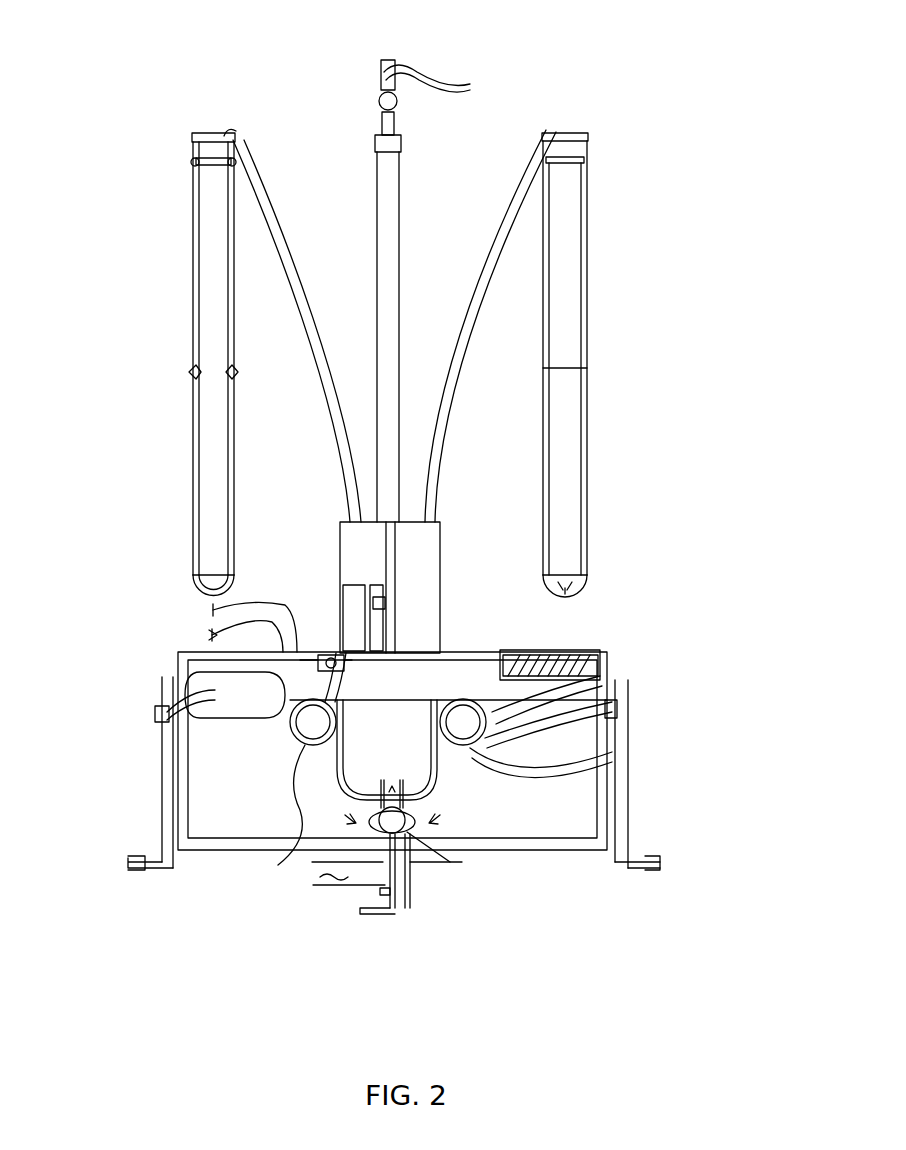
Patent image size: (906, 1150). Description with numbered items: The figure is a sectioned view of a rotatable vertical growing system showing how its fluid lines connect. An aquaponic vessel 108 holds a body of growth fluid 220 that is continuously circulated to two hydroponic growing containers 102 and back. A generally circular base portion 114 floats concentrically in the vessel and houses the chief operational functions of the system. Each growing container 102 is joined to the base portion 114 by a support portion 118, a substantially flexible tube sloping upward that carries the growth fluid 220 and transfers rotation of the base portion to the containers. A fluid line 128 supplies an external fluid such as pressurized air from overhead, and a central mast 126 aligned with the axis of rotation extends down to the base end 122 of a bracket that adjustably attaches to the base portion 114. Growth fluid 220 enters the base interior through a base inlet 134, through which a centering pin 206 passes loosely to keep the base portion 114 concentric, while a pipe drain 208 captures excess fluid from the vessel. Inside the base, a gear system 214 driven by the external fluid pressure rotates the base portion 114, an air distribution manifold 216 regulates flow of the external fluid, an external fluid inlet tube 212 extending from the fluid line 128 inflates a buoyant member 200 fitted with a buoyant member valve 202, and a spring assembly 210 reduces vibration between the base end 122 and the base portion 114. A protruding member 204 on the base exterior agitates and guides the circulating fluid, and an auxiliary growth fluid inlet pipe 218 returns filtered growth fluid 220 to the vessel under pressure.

The hydroponic growing container 102 is at (205, 300).
The aquaponic vessel 108 is at (178, 765).
The base portion 114 is at (448, 548).
The support portion 118 is at (272, 200).
The base end 122 is at (497, 652).
The central mast 126 is at (395, 222).
The fluid line 128 is at (435, 75).
The base inlet 134 is at (440, 792).
The buoyant member 200 is at (668, 710).
The buoyant member valve 202 is at (600, 758).
The protruding member 204 is at (605, 682).
The centering pin 206 is at (450, 862).
The pipe drain 208 is at (418, 840).
The spring assembly 210 is at (230, 700).
The external fluid inlet tube 212 is at (335, 652).
The gear system 214 is at (213, 611).
The air distribution manifold 216 is at (386, 605).
The auxiliary growth fluid inlet pipe 218 is at (160, 835).
The growth fluid 220 is at (212, 636).